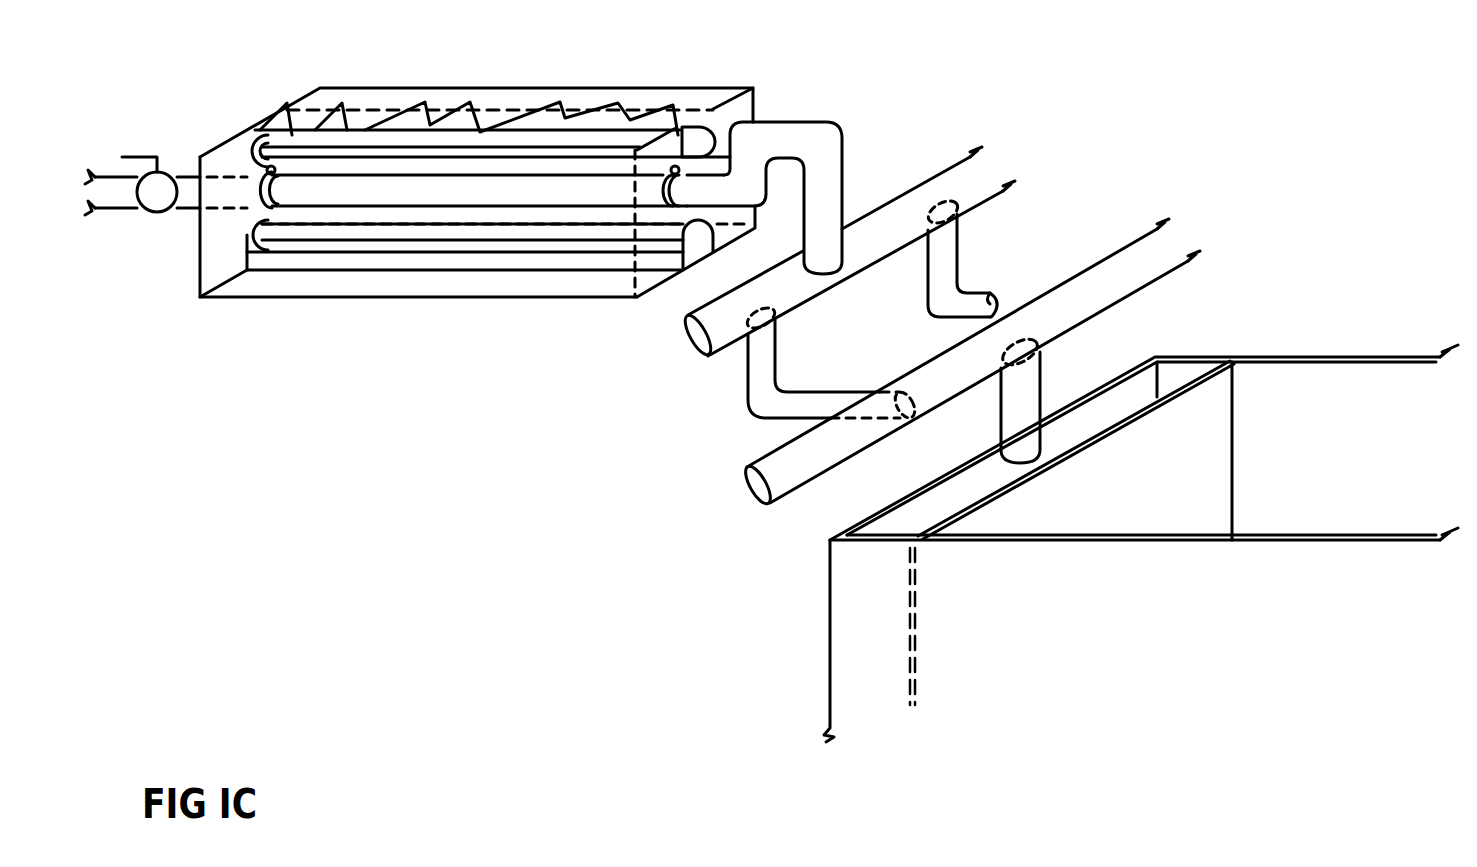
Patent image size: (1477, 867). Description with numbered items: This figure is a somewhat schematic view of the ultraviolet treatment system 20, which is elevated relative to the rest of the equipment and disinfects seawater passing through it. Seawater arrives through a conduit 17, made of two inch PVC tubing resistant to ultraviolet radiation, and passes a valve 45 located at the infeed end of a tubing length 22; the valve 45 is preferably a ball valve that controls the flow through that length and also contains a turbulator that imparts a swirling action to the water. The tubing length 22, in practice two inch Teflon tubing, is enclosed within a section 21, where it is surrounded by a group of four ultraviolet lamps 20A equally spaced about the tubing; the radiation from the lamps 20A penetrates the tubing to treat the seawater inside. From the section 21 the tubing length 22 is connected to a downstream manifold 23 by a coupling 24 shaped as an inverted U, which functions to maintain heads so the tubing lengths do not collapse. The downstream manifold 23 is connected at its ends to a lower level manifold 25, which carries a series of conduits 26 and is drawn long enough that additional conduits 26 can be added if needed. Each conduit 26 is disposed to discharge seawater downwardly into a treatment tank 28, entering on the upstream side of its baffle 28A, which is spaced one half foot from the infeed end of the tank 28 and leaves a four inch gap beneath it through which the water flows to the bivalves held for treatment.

The conduit 17 is at (112, 212).
The ultraviolet treatment system 20 is at (729, 55).
The ultraviolet lamp 20A is at (265, 152).
The section 21 is at (398, 298).
The tubing length 22 is at (333, 193).
The downstream manifold 23 is at (920, 184).
The coupling 24 is at (810, 122).
The lower level manifold 25 is at (1108, 258).
The conduit 26 is at (1001, 412).
The treatment tank 28 is at (1160, 613).
The baffle 28A is at (1200, 397).
The valve 45 is at (157, 213).